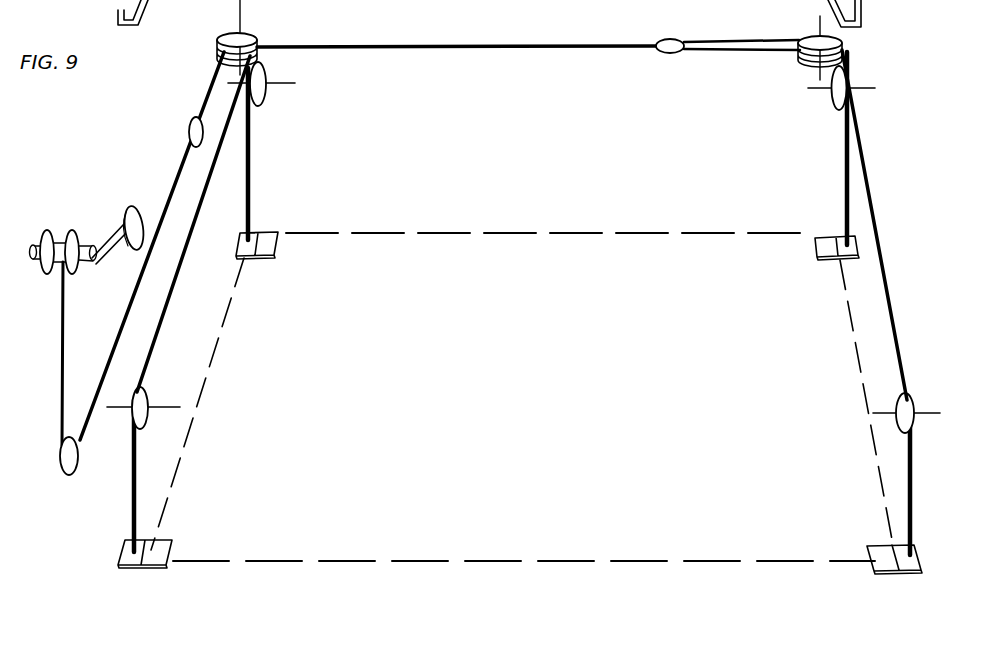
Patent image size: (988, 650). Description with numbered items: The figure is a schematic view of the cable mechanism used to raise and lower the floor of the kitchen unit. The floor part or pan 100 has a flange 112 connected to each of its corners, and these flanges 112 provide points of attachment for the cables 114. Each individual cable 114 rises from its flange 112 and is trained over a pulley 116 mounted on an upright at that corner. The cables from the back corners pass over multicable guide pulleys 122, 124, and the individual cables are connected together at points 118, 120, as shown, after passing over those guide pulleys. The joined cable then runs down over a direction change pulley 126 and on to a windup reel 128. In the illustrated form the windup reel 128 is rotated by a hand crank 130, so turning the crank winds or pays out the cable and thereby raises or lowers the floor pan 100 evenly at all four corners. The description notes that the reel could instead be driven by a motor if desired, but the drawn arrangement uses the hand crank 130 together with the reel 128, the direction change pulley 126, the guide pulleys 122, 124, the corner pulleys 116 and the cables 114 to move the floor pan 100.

The floor part or pan 100 is at (503, 389).
The flange 112 is at (277, 253).
The cable 114 is at (251, 173).
The pulley 116 is at (268, 72).
The connection point 118 is at (676, 40).
The connection point 120 is at (190, 132).
The multicable guide pulley 122 is at (809, 37).
The multicable guide pulley 124 is at (247, 34).
The direction change pulley 126 is at (75, 470).
The windup reel 128 is at (60, 232).
The hand crank 130 is at (104, 230).